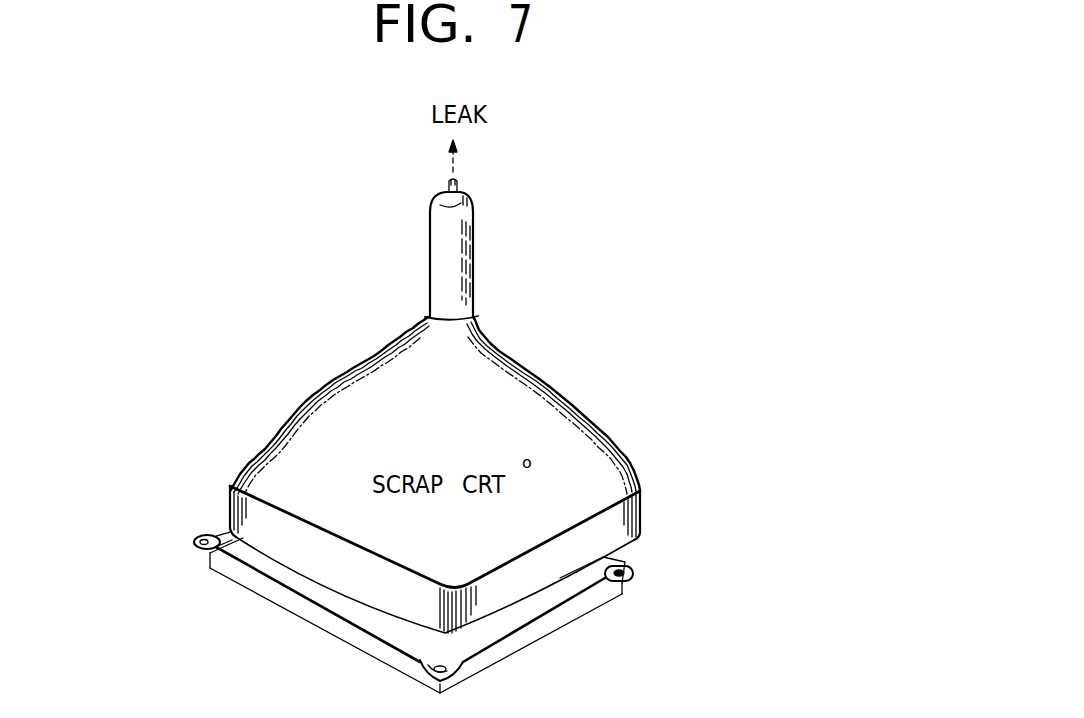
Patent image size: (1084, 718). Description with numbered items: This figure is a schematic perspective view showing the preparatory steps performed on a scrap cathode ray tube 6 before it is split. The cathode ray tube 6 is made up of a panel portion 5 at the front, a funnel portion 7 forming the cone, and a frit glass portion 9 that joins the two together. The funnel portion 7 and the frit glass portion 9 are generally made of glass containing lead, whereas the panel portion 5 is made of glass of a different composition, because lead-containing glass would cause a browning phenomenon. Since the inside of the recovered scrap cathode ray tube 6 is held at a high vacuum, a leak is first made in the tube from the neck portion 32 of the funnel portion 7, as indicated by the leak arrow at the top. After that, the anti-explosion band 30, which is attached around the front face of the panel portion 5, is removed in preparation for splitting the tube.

The cathode ray tube 6 is at (329, 366).
The neck portion 32 is at (475, 246).
The funnel portion 7 is at (557, 384).
The frit glass portion 9 is at (645, 487).
The panel portion 5 is at (646, 516).
The anti-explosion band 30 is at (287, 600).